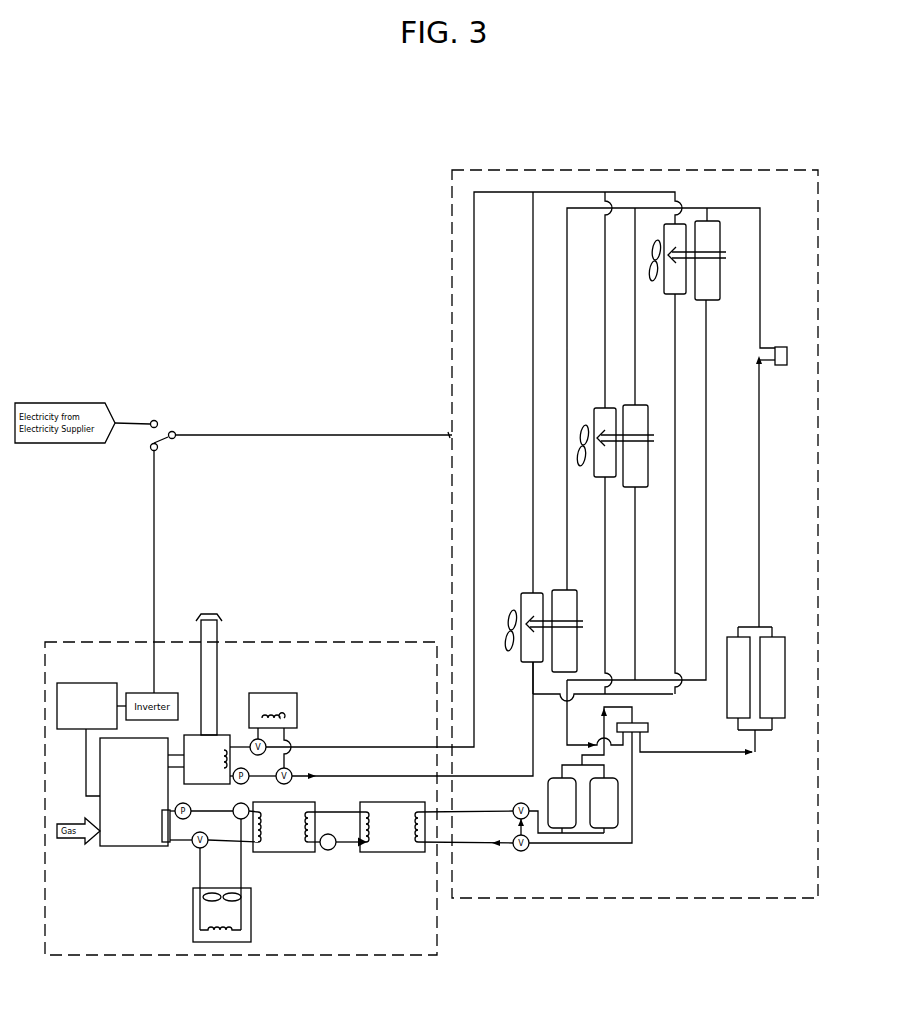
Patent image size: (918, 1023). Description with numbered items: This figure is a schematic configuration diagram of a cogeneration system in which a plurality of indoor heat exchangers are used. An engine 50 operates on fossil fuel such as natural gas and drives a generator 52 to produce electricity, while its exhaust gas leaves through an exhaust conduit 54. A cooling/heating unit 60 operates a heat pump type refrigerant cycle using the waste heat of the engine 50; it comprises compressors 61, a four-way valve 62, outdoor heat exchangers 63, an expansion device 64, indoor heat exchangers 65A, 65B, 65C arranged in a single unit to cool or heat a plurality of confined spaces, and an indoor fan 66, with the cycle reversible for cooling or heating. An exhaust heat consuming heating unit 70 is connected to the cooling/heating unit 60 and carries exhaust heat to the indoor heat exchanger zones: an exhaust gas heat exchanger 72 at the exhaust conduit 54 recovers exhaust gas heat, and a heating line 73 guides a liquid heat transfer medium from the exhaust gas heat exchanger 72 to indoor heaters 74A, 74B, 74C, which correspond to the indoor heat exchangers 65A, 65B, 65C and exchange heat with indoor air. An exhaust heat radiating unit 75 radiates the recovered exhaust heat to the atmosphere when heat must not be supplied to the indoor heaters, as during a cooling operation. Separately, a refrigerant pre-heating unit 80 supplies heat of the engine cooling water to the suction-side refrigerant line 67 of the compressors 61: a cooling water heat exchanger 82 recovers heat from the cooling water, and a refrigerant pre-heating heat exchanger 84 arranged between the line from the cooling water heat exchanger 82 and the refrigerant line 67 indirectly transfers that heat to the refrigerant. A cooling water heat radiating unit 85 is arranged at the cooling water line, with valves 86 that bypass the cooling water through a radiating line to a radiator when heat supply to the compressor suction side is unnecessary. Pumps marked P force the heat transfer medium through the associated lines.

The engine 50 is at (124, 841).
The generator 52 is at (98, 690).
The exhaust conduit 54 is at (208, 672).
The cooling/heating unit 60 is at (664, 135).
The compressor 61 is at (565, 822).
The four-way valve 62 is at (642, 738).
The outdoor heat exchanger 63 is at (780, 637).
The expansion device 64 is at (782, 347).
The indoor heat exchanger 65A is at (567, 590).
The indoor heat exchanger 65B is at (640, 405).
The indoor heat exchanger 65C is at (712, 300).
The indoor fan 66 is at (510, 620).
The refrigerant line 67 is at (488, 845).
The exhaust heat consuming heating unit 70 is at (358, 717).
The exhaust gas heat exchanger 72 is at (222, 735).
The heating line 73 is at (366, 746).
The indoor heater 74A is at (527, 602).
The indoor heater 74B is at (600, 408).
The indoor heater 74C is at (672, 290).
The exhaust heat radiating unit 75 is at (289, 706).
The refrigerant pre-heating unit 80 is at (368, 866).
The cooling water heat exchanger 82 is at (296, 852).
The refrigerant pre-heating heat exchanger 84 is at (394, 852).
The cooling water heat radiating unit 85 is at (183, 917).
The valve 86 is at (234, 806).